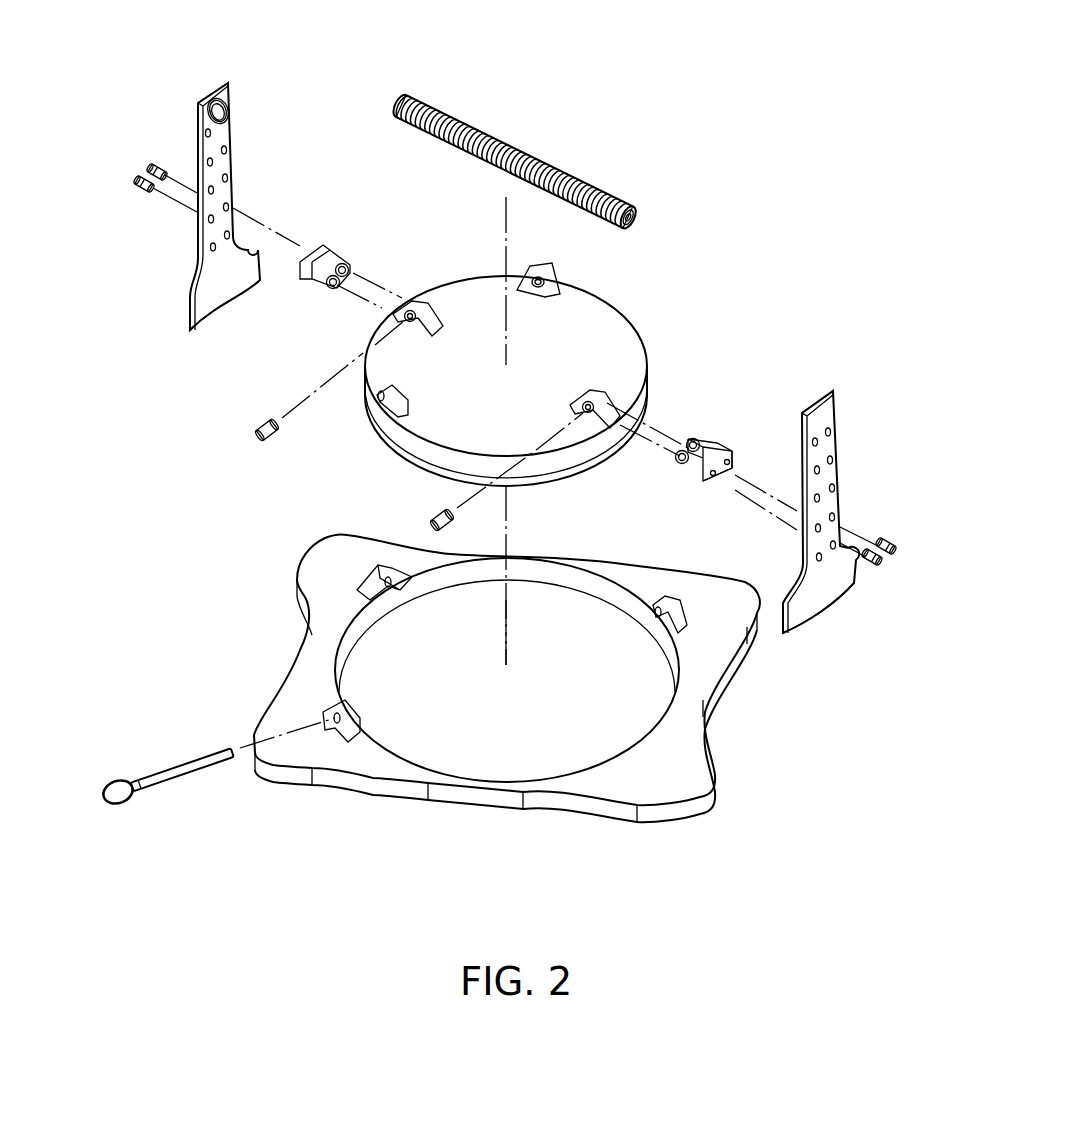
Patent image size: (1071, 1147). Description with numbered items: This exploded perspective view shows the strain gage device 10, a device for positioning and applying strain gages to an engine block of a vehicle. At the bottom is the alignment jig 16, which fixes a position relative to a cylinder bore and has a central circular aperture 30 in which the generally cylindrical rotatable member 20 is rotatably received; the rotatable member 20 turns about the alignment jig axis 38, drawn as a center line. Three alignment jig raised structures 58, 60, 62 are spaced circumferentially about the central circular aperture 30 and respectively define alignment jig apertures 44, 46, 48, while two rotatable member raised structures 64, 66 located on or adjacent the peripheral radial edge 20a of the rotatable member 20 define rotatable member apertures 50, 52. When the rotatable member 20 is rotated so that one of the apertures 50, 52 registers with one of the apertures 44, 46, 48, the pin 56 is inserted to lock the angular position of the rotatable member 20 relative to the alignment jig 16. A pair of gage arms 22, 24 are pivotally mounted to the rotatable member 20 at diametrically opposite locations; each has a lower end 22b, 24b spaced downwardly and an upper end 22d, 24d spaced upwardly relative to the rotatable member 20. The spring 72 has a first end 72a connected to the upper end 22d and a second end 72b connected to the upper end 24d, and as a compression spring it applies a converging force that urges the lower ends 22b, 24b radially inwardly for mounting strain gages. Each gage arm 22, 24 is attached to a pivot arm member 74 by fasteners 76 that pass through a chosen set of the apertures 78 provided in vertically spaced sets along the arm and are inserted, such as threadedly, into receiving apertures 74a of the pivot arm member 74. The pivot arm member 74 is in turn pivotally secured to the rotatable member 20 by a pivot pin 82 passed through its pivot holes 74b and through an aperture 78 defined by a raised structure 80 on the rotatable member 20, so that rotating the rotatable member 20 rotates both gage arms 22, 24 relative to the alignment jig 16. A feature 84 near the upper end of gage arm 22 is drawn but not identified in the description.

The strain gage device 10 is at (716, 82).
The alignment jig 16 is at (738, 790).
The rotatable member 20 is at (650, 268).
The peripheral radial edge 20a is at (641, 346).
The gage arm 22 is at (186, 217).
The lower end 22b is at (212, 295).
The upper end 22d is at (229, 83).
The gage arm 24 is at (792, 531).
The lower end 24b is at (818, 596).
The upper end 24d is at (822, 392).
The central circular aperture 30 is at (436, 580).
The alignment jig axis 38 is at (508, 645).
The alignment jig aperture 44 is at (338, 742).
The alignment jig aperture 46 is at (396, 583).
The alignment jig aperture 48 is at (659, 616).
The rotatable member aperture 50 is at (380, 402).
The rotatable member aperture 52 is at (537, 293).
The pin 56 is at (178, 772).
The alignment jig raised structure 58 is at (352, 712).
The alignment jig raised structure 60 is at (368, 572).
The alignment jig raised structure 62 is at (686, 610).
The rotatable member raised structure 64 is at (405, 400).
The rotatable member raised structure 66 is at (545, 266).
The spring 72 is at (514, 150).
The first end of spring 72a is at (404, 98).
The second end of spring 72b is at (632, 206).
The pivot arm member 74 is at (322, 262).
The receiving aperture 74a is at (735, 460).
The pivot hole 74b is at (335, 288).
The fastener 76 is at (151, 166).
The aperture 78 is at (211, 221).
The raised structure 80 is at (430, 310).
The pivot pin 82 is at (262, 422).
The support eyelet 84 is at (231, 108).